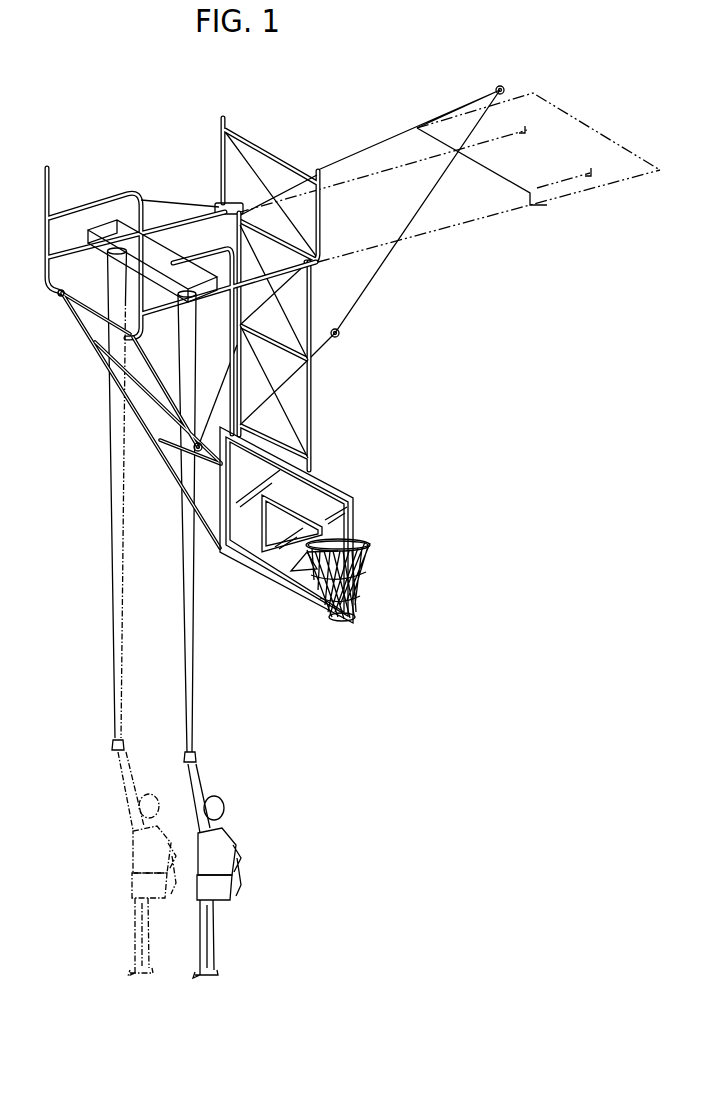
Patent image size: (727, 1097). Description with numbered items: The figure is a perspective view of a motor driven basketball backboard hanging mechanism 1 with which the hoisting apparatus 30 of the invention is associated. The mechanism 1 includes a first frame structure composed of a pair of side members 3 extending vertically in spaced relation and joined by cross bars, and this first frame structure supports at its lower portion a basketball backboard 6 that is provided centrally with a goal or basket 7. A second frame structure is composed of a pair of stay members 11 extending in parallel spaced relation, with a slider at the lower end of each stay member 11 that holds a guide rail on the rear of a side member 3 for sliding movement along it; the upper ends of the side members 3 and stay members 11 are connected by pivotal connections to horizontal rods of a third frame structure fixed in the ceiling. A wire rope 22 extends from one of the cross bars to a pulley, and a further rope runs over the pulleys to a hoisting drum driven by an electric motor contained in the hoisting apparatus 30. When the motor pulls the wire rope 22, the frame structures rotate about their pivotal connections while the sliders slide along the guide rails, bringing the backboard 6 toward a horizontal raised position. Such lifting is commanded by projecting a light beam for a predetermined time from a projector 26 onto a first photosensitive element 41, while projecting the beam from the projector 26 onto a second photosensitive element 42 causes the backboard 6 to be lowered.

The basketball backboard hanging mechanism 1 is at (375, 302).
The side members 3 is at (233, 337).
The basketball backboard 6 is at (344, 515).
The goal or basket 7 is at (367, 583).
The stay members 11 is at (102, 348).
The wire rope 22 is at (400, 238).
The projector 26 is at (183, 744).
The hoisting apparatus 30 is at (158, 247).
The first photosensitive element 41 is at (111, 255).
The second photosensitive element 42 is at (191, 297).